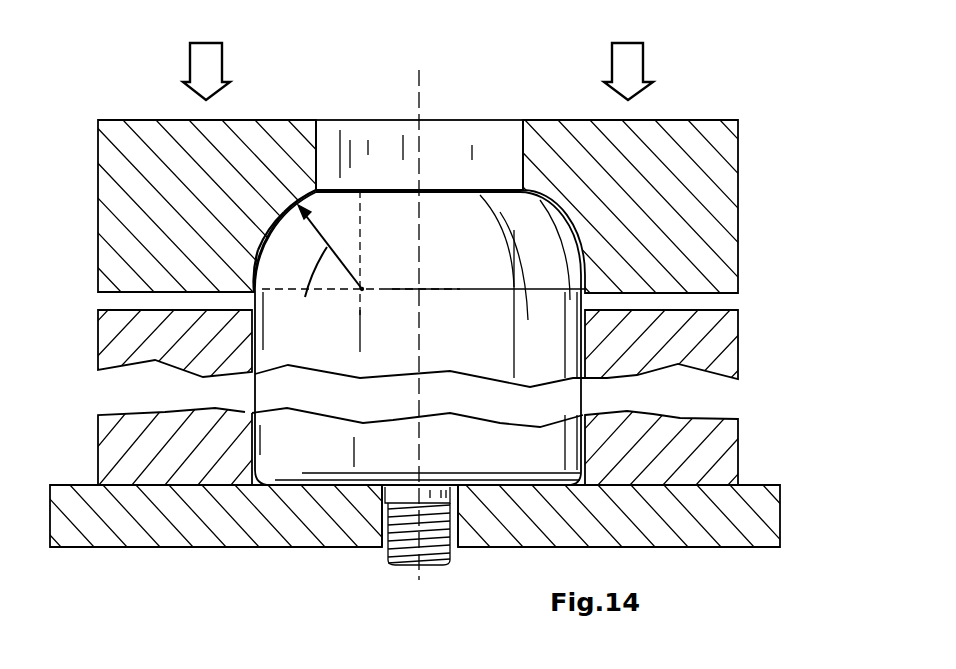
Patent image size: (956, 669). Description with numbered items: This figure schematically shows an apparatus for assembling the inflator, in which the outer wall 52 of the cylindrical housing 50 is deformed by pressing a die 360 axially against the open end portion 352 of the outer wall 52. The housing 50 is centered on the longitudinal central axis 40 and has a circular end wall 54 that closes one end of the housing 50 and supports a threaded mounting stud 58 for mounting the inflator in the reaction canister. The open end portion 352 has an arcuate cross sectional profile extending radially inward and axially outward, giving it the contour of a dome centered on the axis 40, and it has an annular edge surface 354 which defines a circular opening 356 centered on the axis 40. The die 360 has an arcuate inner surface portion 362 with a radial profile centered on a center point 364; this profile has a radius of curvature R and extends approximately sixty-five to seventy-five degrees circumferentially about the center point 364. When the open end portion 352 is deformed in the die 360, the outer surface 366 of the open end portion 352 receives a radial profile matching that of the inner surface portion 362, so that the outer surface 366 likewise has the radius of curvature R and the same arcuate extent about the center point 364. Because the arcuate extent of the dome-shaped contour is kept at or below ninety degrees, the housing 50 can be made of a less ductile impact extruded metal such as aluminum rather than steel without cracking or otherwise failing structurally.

The longitudinal central axis 40 is at (420, 88).
The cylindrical housing 50 is at (263, 359).
The tubular outer wall 52 is at (293, 342).
The circular end wall 54 is at (310, 487).
The threaded mounting stud 58 is at (398, 553).
The open end portion 352 is at (274, 221).
The annular edge surface 354 is at (453, 190).
The circular opening 356 is at (382, 178).
The die 360 is at (98, 148).
The arcuate inner surface portion 362 is at (255, 247).
The center point 364 is at (363, 288).
The outer surface 366 is at (283, 212).